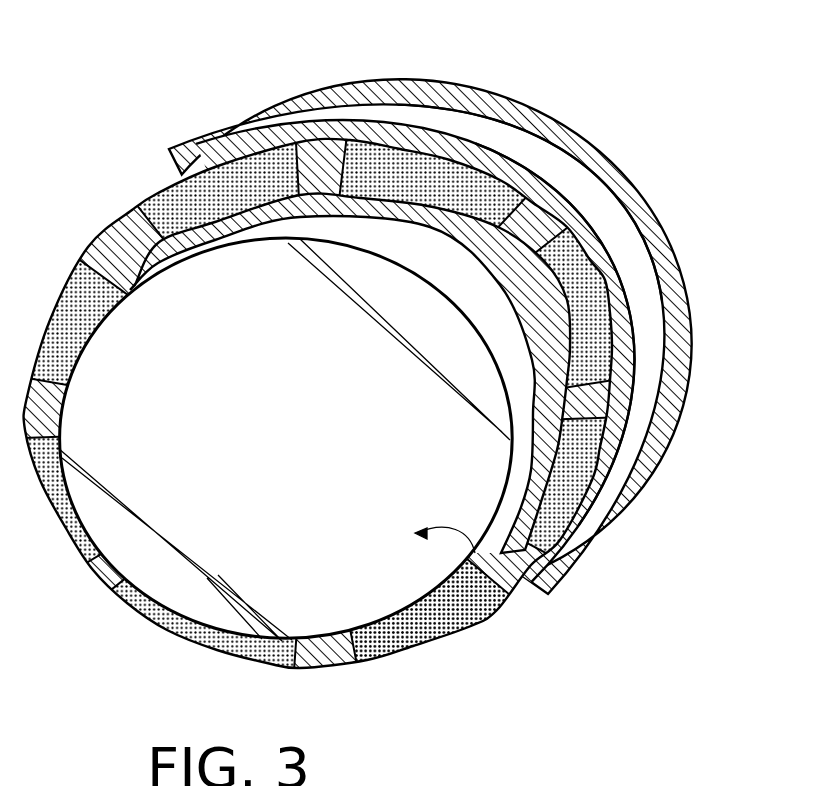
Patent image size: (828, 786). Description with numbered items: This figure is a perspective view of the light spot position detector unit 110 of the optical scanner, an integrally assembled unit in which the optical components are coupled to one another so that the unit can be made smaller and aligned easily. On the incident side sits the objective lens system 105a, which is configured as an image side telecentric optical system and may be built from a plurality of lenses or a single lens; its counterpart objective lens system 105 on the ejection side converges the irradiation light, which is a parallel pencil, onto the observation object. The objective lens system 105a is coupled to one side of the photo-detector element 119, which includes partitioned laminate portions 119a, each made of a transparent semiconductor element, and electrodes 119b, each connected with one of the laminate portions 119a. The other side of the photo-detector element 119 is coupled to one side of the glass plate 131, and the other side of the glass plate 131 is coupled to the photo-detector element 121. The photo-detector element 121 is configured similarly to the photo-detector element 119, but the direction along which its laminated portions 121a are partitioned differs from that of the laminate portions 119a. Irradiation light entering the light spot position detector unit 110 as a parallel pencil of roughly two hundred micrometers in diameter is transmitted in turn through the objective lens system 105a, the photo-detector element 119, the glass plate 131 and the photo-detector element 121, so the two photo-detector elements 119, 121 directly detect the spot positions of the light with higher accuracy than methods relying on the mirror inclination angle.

The shaft 105 is at (207, 580).
The objective lens system 105a is at (504, 608).
The light spot position detector unit 110 is at (388, 396).
The photo-detector element 119 is at (365, 397).
The partitioned laminate portions 119a is at (641, 317).
The electrodes 119b is at (431, 637).
The photo-detector element 121 is at (550, 115).
The laminated portions 121a is at (637, 180).
The glass plate 131 is at (320, 108).